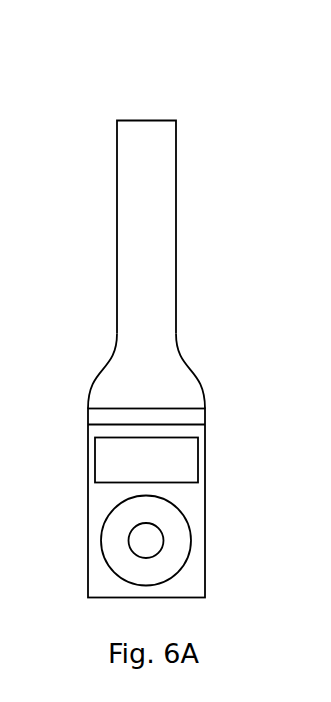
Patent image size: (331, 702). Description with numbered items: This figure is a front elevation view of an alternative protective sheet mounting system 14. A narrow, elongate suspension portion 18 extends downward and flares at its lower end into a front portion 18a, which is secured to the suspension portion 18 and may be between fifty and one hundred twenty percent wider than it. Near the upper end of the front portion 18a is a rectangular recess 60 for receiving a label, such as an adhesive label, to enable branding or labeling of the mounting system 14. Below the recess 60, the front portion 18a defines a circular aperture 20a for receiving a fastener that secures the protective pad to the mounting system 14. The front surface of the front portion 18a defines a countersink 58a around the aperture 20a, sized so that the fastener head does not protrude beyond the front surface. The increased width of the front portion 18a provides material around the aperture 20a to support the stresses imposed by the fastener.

The mounting system 14 is at (153, 359).
The suspension portion 18 is at (155, 263).
The front portion 18a is at (103, 493).
The recess 60 is at (107, 452).
The countersink 58a is at (115, 523).
The aperture 20a is at (132, 550).